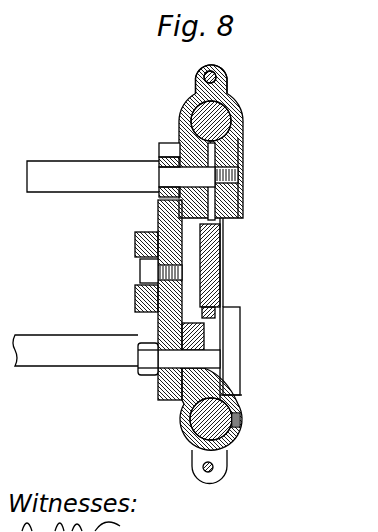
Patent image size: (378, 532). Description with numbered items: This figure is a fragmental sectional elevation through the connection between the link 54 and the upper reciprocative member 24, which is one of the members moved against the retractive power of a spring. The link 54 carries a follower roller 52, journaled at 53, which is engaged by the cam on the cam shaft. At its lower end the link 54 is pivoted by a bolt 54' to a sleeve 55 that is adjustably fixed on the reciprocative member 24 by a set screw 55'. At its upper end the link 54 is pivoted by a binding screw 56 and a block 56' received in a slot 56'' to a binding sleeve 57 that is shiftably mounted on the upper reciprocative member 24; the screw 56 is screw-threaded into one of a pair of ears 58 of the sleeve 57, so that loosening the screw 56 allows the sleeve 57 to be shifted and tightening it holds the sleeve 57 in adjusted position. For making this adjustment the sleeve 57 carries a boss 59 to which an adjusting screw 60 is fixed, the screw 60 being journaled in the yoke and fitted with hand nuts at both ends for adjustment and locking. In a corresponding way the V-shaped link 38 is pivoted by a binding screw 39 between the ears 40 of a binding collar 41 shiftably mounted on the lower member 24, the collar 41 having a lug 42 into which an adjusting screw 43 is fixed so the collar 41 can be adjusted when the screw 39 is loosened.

The reciprocative member 24 is at (218, 120).
The V-shaped link 38 is at (221, 262).
The binding screw 39 is at (38, 350).
The ears 40 is at (214, 303).
The binding collar 41 is at (231, 392).
The lug 42 is at (197, 462).
The adjusting screw 43 is at (207, 473).
The roller 52 is at (135, 245).
The journal 53 is at (147, 273).
The link 54 is at (137, 299).
The bolt 54' is at (150, 387).
The sleeve 55 is at (196, 423).
The set screw 55' is at (257, 433).
The binding screw 56 is at (121, 153).
The block 56' is at (143, 156).
The slot 56'' is at (161, 133).
The binding sleeve 57 is at (245, 157).
The ears 58 is at (243, 200).
The boss 59 is at (226, 80).
The adjusting screw 60 is at (203, 74).